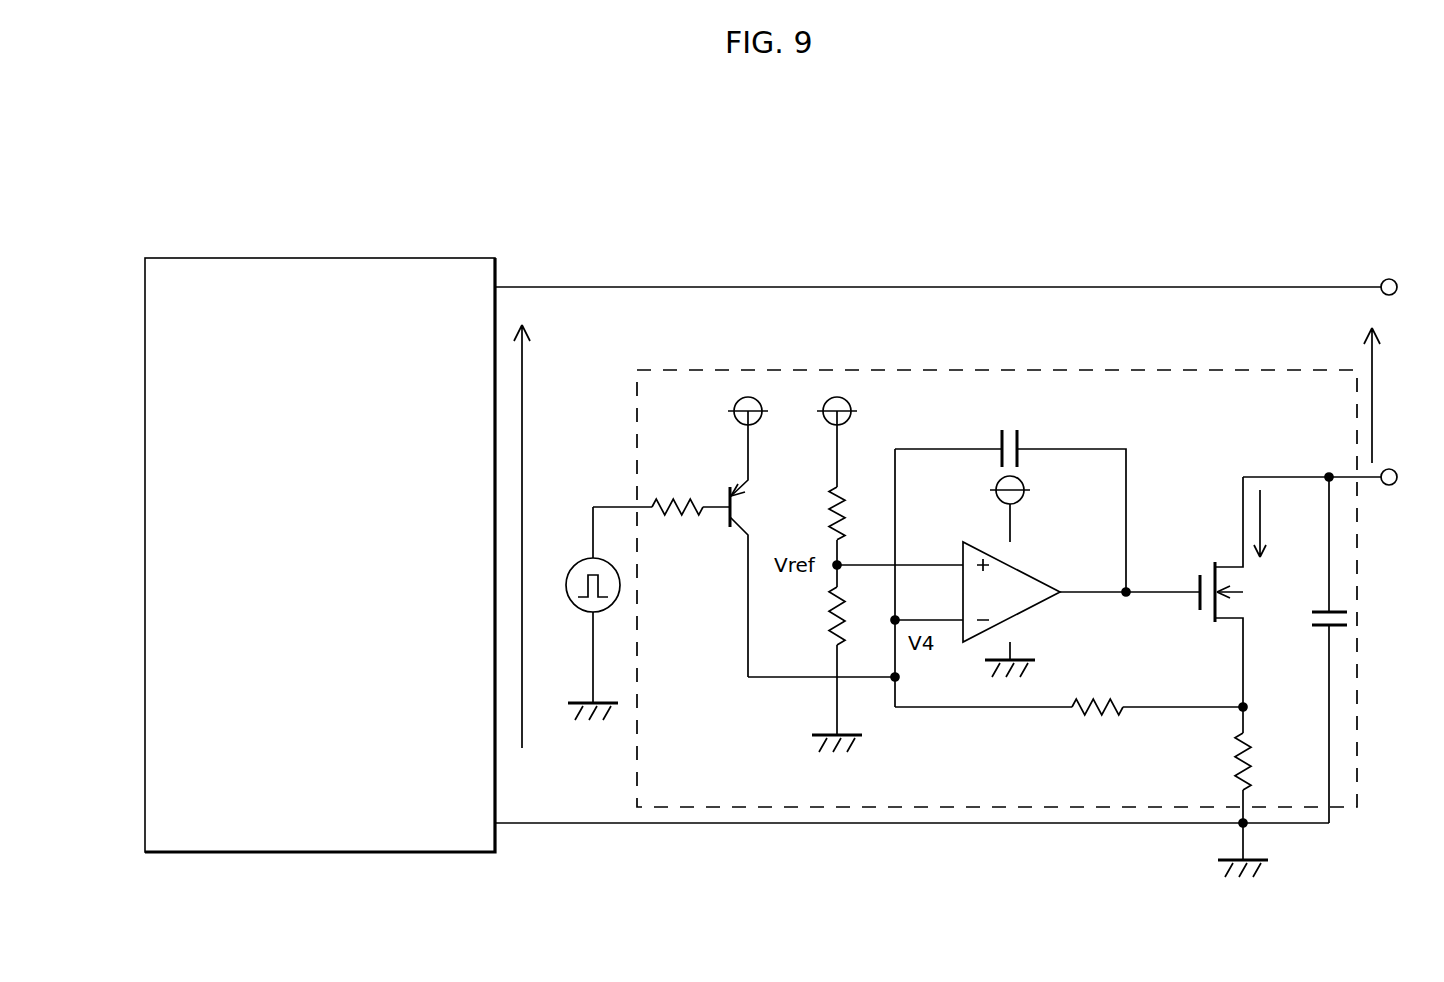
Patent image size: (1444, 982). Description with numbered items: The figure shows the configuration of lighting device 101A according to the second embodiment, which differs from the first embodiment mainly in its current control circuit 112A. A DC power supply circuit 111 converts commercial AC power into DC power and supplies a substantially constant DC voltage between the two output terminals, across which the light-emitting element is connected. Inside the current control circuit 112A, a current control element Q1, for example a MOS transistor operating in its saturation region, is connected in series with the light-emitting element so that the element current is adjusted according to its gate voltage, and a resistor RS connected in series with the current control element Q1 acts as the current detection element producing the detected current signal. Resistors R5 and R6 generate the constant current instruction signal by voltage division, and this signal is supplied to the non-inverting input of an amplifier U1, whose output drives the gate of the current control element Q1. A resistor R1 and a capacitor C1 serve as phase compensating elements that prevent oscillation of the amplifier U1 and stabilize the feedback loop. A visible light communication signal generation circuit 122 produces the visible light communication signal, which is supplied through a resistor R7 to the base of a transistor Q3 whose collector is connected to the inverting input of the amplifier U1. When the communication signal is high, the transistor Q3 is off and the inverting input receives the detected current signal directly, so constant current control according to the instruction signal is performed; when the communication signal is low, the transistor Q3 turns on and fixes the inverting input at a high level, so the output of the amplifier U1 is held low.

The DC power supply circuit 111 is at (360, 257).
The lighting device 101A is at (1297, 210).
The current control circuit 112A is at (877, 370).
The visible light communication signal generation circuit 122 is at (576, 611).
The resistor R7 is at (661, 524).
The transistor Q3 is at (734, 537).
The resistor R5 is at (823, 481).
The resistor R6 is at (826, 658).
The resistor R1 is at (1069, 691).
The capacitor C1 is at (1010, 497).
The amplifier U1 is at (1081, 576).
The current control element Q1 is at (1246, 592).
The resistor RS is at (1247, 749).